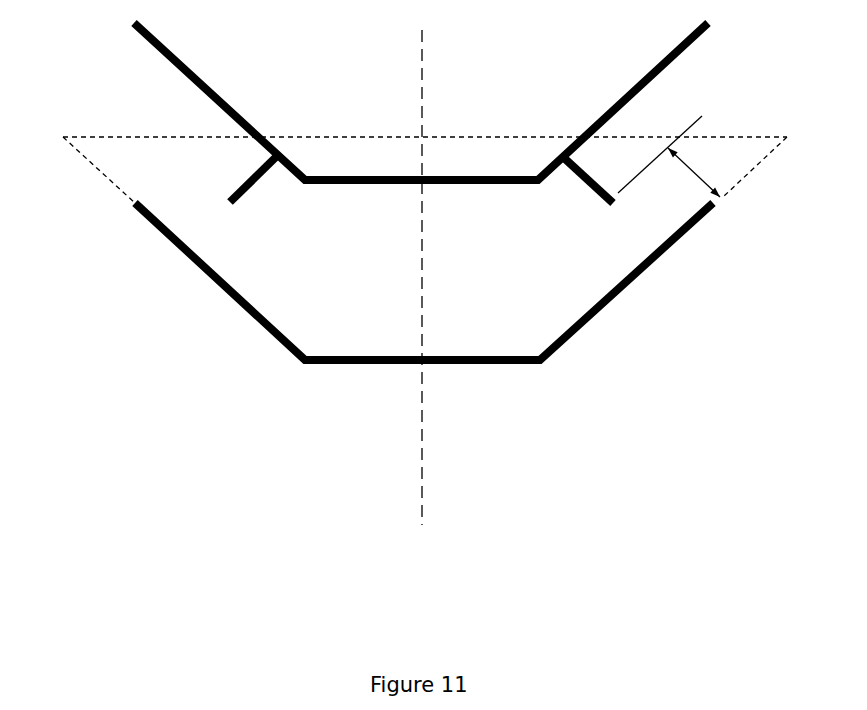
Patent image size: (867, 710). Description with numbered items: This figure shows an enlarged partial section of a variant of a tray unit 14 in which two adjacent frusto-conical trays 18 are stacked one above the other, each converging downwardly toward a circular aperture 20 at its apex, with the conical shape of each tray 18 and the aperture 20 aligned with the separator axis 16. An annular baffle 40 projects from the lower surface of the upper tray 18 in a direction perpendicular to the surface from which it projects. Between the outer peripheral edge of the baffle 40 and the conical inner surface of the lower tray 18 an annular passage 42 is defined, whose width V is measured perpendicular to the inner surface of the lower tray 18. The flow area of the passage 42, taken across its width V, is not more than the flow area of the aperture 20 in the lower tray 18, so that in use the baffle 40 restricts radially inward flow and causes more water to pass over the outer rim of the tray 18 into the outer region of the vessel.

The tray unit 14 is at (114, 90).
The separator axis 16 is at (425, 69).
The frusto-conical tray 18 is at (187, 257).
The circular aperture 20 is at (483, 363).
The annular baffle 40 is at (588, 173).
The annular passage 42 is at (633, 232).
The width of the annular passage V is at (697, 165).